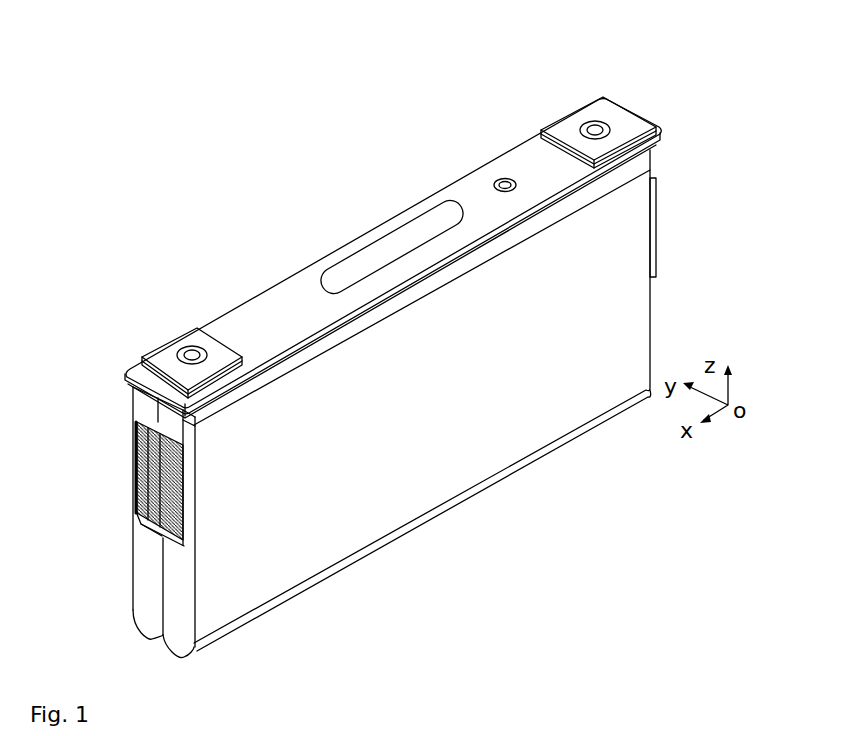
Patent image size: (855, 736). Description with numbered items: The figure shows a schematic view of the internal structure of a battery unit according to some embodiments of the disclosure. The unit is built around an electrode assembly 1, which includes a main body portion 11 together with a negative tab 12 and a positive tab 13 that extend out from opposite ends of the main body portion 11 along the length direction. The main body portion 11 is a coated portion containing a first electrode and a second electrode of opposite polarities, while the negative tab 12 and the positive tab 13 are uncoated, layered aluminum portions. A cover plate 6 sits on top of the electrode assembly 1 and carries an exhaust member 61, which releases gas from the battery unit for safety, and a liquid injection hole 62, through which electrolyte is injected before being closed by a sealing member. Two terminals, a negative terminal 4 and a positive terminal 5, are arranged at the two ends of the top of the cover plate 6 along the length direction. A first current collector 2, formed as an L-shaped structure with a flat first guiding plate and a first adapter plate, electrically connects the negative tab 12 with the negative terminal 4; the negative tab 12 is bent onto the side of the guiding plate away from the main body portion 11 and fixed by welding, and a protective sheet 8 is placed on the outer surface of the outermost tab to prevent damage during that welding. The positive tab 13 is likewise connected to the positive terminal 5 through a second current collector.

The electrode assembly 1 is at (398, 341).
The first current collector 2 is at (137, 413).
The negative terminal 4 is at (191, 350).
The positive terminal 5 is at (596, 124).
The cover plate 6 is at (393, 242).
The protective sheet 8 is at (137, 462).
The main body portion 11 is at (442, 485).
The negative tab 12 is at (190, 533).
The positive tab 13 is at (653, 218).
The exhaust member 61 is at (372, 258).
The liquid injection hole 62 is at (505, 180).